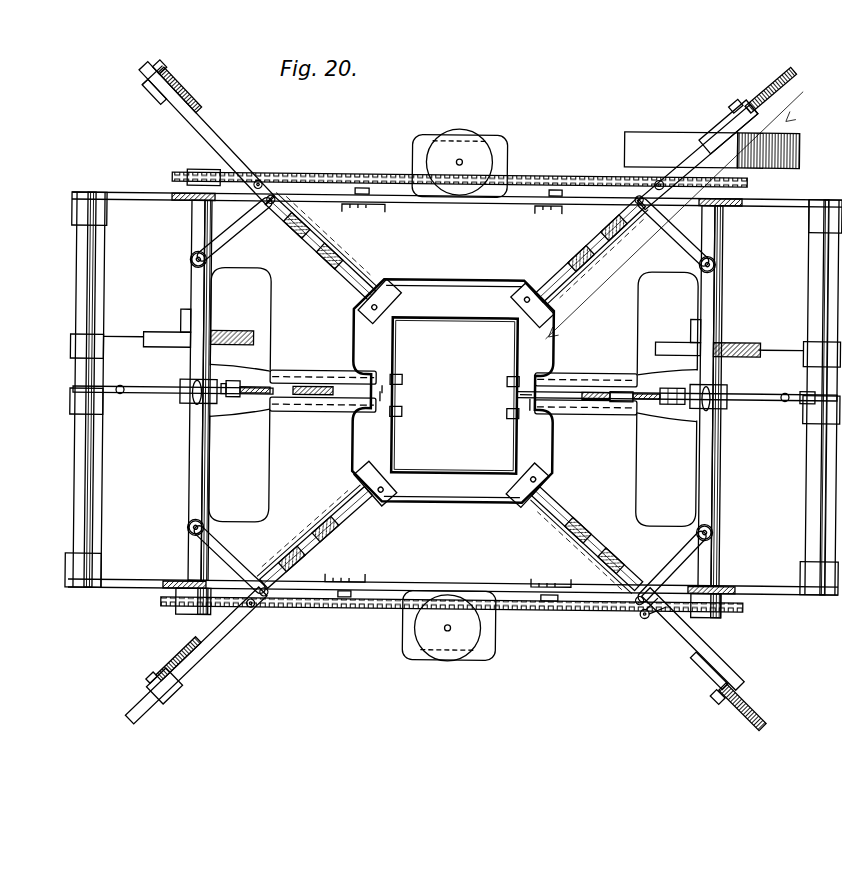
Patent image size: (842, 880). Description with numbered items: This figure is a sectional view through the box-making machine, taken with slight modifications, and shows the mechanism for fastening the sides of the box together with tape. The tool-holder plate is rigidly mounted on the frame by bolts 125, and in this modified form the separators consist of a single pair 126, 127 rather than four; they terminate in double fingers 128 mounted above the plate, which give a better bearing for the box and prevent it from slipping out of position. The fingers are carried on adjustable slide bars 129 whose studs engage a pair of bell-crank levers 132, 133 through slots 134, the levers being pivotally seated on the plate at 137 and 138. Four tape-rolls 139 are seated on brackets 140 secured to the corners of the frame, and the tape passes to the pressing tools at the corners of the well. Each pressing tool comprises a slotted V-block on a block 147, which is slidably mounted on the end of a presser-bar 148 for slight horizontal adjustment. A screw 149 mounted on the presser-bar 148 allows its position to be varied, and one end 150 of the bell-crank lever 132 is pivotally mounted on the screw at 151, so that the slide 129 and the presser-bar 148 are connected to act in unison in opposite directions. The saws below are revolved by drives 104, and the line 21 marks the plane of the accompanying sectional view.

The section line 21— 21 is at (666, 220).
The drive 104 is at (462, 155).
The bolt 125 is at (556, 184).
The separator 126 is at (520, 405).
The separator 127 is at (382, 397).
The double fingers 128 is at (507, 380).
The adjustable slide bar 129 is at (230, 385).
The bell-crank lever 132 is at (720, 300).
The bell-crank lever 133 is at (718, 456).
The slot 134 is at (737, 425).
The pivot 137 is at (189, 262).
The pivot 138 is at (189, 530).
The tape-roll 139 is at (208, 123).
The bracket 140 is at (225, 161).
The block 147 is at (520, 298).
The presser-bar 148 is at (535, 285).
The screw 149 is at (572, 262).
The end of bell-crank lever 150 is at (228, 236).
The pivot on screw 151 is at (652, 183).